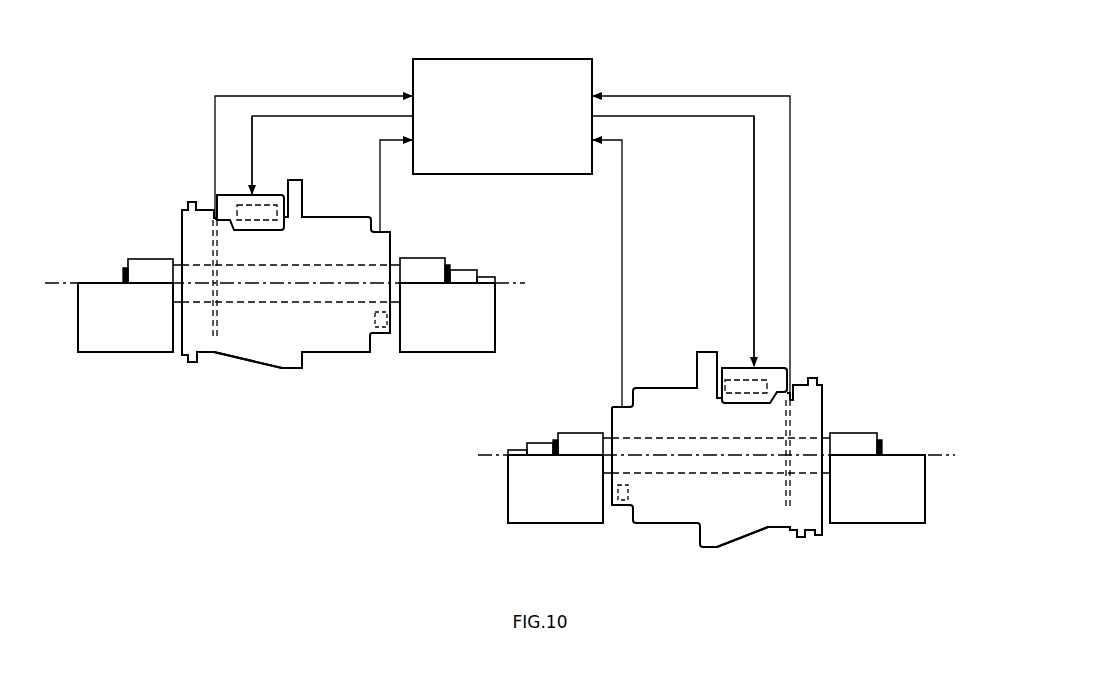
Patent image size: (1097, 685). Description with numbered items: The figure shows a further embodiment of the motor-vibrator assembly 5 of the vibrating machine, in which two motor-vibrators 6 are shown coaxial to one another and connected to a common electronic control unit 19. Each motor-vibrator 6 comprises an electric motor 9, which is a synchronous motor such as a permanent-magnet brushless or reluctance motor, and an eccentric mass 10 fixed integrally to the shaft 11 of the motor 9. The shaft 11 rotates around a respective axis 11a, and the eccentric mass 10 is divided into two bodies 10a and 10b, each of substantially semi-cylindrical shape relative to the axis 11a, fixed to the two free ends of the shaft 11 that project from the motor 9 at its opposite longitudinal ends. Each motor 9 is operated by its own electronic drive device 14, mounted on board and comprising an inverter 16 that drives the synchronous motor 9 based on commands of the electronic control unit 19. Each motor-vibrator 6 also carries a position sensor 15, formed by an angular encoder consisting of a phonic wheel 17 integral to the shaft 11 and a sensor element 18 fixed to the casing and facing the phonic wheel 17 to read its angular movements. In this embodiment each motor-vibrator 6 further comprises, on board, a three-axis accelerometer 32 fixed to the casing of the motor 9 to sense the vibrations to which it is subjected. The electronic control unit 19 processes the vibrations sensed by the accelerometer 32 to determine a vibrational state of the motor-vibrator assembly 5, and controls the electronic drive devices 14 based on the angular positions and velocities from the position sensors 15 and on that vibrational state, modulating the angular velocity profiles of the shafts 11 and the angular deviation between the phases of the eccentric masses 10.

The motor-vibrator assembly 5 is at (380, 70).
The electronic control unit 19 is at (502, 116).
The motor-vibrator 6 is at (404, 232).
The electric motor 9 is at (261, 373).
The eccentric mass 10 is at (500, 424).
The first body of eccentric mass 10a is at (107, 337).
The second body of eccentric mass 10b is at (448, 340).
The shaft 11 is at (285, 300).
The axis 11a is at (68, 282).
The electronic drive device 14 is at (258, 196).
The position sensor 15 is at (202, 243).
The inverter 16 is at (258, 226).
The phonic wheel 17 is at (217, 318).
The sensor element 18 is at (213, 222).
The accelerometer 32 is at (375, 320).